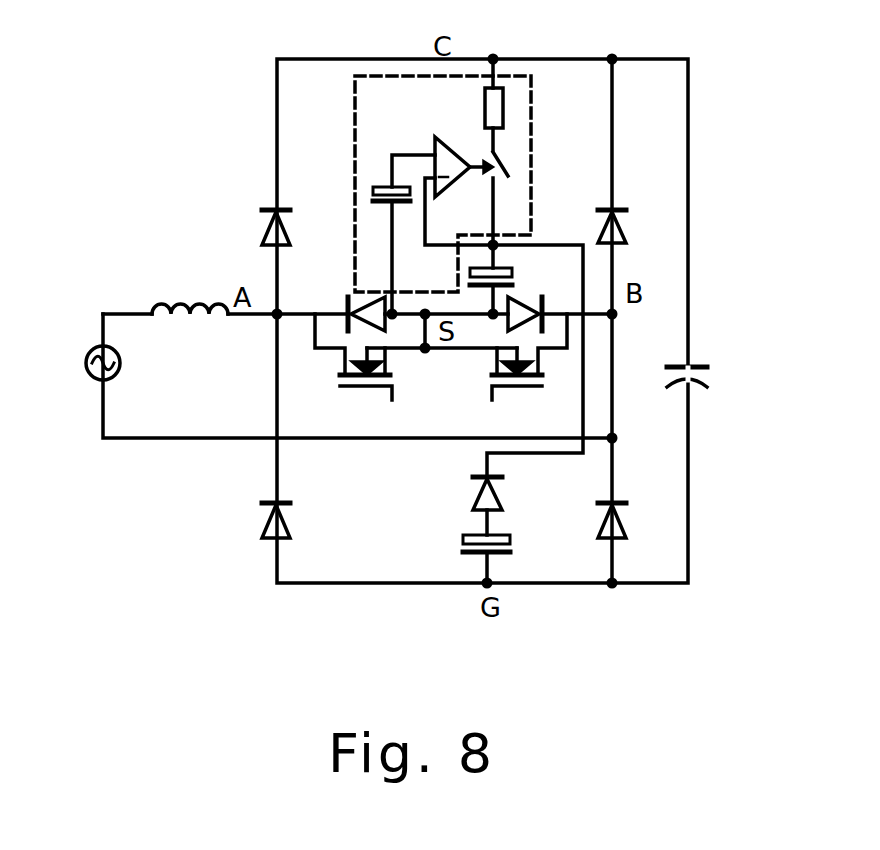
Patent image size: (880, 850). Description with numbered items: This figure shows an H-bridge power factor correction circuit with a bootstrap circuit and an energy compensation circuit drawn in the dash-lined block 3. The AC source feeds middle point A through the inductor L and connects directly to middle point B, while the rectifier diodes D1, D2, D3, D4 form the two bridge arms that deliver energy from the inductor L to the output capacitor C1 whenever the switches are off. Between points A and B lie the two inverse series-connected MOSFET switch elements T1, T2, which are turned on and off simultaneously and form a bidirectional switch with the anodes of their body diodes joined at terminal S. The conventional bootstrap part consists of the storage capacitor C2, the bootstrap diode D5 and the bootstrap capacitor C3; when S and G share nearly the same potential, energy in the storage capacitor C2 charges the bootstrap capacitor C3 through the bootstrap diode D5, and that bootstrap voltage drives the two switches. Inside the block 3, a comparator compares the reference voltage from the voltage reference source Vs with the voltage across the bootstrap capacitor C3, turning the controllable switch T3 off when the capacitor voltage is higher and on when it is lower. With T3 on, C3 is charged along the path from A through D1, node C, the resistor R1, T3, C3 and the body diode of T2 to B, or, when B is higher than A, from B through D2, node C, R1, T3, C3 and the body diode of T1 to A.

The dash-lined block 3 is at (463, 172).
The inductor L is at (190, 291).
The rectifier diode D1 is at (296, 210).
The rectifier diode D2 is at (630, 209).
The rectifier diode D3 is at (630, 508).
The rectifier diode D4 is at (297, 505).
The bootstrap diode D5 is at (519, 487).
The output capacitor C1 is at (709, 362).
The storage capacitor C2 is at (509, 560).
The bootstrap capacitor C3 is at (523, 279).
The switch element T1 is at (353, 373).
The switch element T2 is at (529, 371).
The controllable switch T3 is at (517, 196).
The resistor R1 is at (476, 104).
The voltage reference source Vs is at (396, 234).